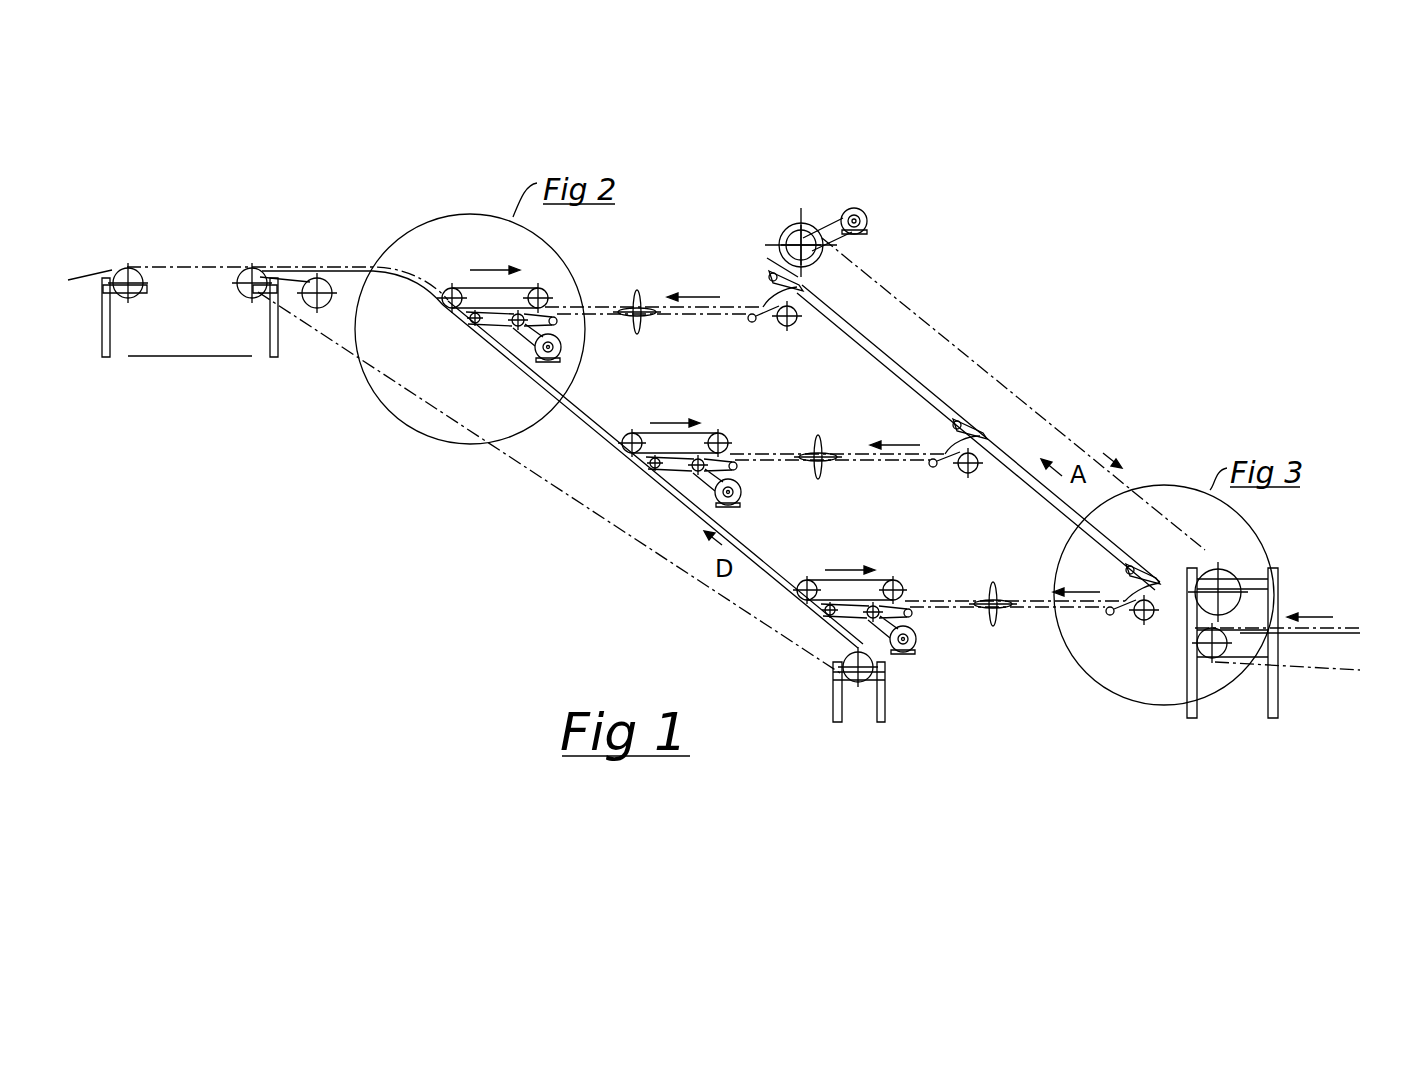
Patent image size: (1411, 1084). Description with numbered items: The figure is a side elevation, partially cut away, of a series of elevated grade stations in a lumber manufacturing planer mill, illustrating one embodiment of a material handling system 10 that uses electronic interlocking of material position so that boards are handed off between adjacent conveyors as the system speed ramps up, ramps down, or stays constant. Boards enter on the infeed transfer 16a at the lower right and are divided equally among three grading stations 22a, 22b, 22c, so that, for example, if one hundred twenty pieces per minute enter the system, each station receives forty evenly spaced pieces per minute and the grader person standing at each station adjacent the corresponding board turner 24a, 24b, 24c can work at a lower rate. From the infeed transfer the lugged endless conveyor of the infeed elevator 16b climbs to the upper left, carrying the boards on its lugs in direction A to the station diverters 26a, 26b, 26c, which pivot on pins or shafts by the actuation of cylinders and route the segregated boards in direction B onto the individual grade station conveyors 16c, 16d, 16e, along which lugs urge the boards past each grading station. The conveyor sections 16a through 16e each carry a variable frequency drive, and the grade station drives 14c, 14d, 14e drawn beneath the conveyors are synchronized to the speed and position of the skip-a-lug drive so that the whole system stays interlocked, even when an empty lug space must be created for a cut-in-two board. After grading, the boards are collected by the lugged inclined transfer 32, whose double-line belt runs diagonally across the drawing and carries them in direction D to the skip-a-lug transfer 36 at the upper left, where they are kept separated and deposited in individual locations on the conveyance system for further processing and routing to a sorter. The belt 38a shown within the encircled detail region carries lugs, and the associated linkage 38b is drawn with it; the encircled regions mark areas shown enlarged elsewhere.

The material handling system 10 is at (982, 289).
The skip-a-lug transfer 36 is at (197, 272).
The inclined transfer 32 is at (588, 423).
The belt 38a is at (520, 283).
The drive linkage 38b is at (497, 330).
The grade station variable frequency drive 14e is at (560, 343).
The grade station variable frequency drive 14d is at (737, 487).
The grade station variable frequency drive 14c is at (915, 642).
The infeed transfer 16a is at (1340, 628).
The infeed elevator 16b is at (1058, 428).
The conveyor section 16c is at (1030, 610).
The conveyor section 16d is at (892, 457).
The grade station conveyor 16e is at (713, 313).
The grading station 22a is at (983, 626).
The grading station 22b is at (830, 482).
The grading station 22c is at (665, 338).
The board turner 24a is at (988, 597).
The board turner 24b is at (820, 437).
The board turner 24c is at (637, 290).
The station diverter 26a is at (1153, 570).
The station diverter 26b is at (977, 422).
The station diverter 26c is at (800, 277).